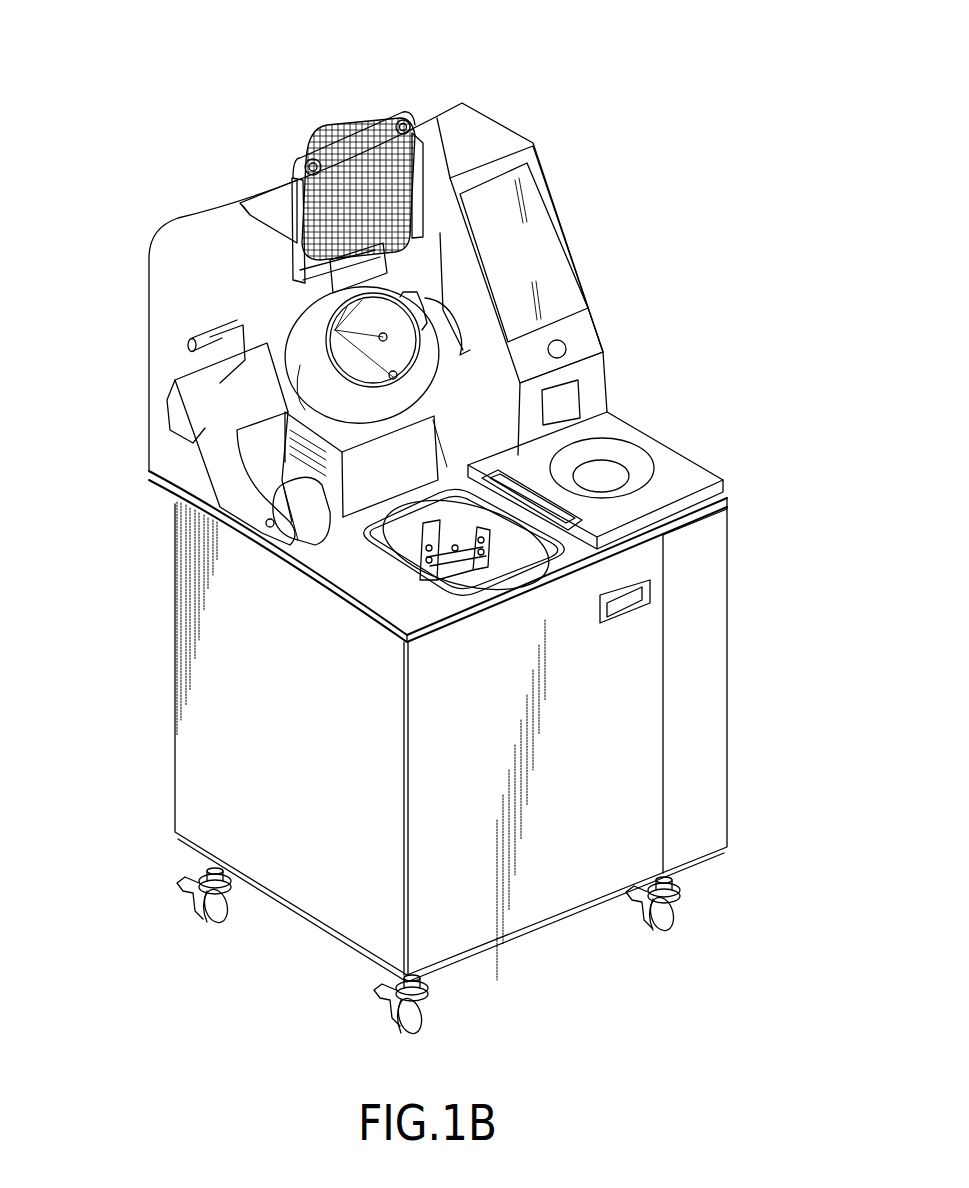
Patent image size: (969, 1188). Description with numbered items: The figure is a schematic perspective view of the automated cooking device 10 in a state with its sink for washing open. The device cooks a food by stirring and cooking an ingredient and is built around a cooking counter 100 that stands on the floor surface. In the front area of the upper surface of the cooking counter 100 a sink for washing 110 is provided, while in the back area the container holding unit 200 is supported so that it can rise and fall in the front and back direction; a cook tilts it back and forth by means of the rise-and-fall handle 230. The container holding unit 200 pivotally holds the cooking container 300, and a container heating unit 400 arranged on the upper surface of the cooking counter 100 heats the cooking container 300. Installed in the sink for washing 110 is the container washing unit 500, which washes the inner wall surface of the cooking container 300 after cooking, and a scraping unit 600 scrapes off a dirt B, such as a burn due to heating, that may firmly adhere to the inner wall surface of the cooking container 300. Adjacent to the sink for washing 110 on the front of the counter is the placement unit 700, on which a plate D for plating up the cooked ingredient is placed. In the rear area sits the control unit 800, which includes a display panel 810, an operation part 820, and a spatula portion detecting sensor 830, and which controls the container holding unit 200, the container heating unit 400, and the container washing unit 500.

The automated cooking device 10 is at (424, 532).
The cooking counter 100 is at (400, 543).
The sink for washing 110 is at (345, 568).
The container holding unit 200 is at (196, 429).
The rise-and-fall handle 230 is at (190, 340).
The cooking container 300 is at (279, 320).
The container heating unit 400 is at (290, 463).
The container washing unit 500 is at (458, 532).
The scraping unit 600 is at (399, 537).
The placement unit 700 is at (626, 476).
The control unit 800 is at (413, 287).
The display panel 810 is at (548, 272).
The operation part 820 is at (567, 348).
The spatula portion detecting sensor 830 is at (400, 258).
The dirt B is at (335, 330).
The plate D is at (620, 453).